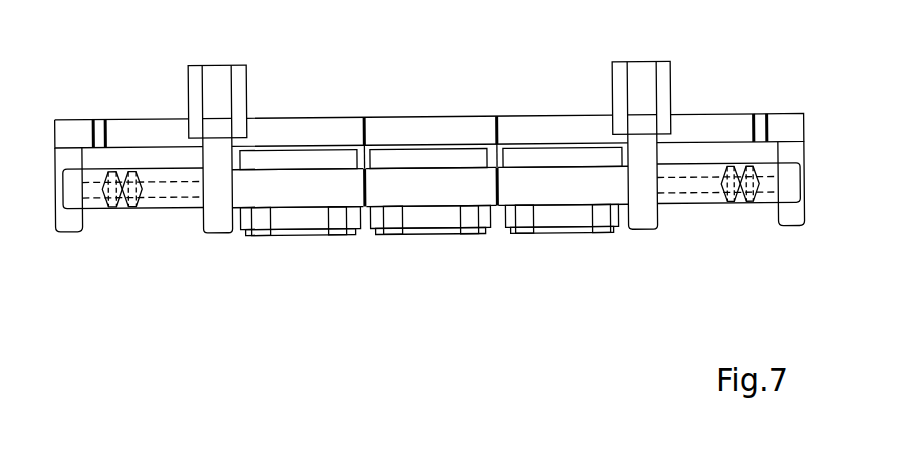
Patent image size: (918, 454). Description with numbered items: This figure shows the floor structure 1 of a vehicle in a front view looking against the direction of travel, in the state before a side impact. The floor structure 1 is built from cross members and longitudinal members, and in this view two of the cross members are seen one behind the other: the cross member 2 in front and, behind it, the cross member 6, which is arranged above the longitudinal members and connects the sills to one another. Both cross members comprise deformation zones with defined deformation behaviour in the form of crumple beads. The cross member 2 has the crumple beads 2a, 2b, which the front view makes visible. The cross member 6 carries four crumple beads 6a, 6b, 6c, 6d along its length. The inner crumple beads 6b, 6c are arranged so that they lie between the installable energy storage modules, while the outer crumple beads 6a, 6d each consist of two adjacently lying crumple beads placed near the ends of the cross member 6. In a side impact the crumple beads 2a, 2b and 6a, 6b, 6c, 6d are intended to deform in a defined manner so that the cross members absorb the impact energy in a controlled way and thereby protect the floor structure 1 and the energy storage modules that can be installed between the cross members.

The floor structure 1 is at (165, 277).
The cross member 2 is at (292, 191).
The crumple bead 2a is at (498, 186).
The crumple bead 2b is at (366, 187).
The cross member 6 is at (298, 129).
The crumple bead 6a is at (769, 134).
The crumple bead 6b is at (499, 133).
The crumple bead 6c is at (367, 131).
The crumple bead 6d is at (108, 129).